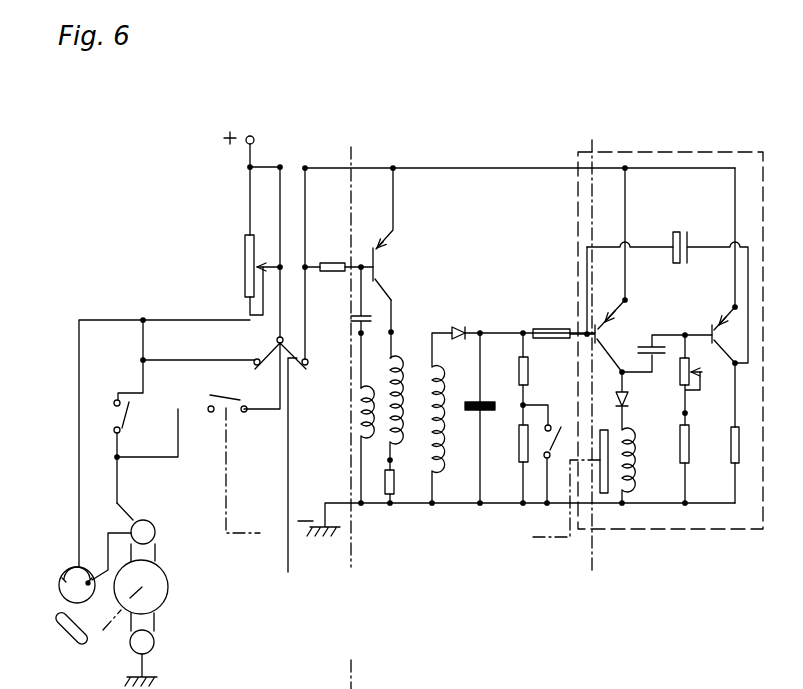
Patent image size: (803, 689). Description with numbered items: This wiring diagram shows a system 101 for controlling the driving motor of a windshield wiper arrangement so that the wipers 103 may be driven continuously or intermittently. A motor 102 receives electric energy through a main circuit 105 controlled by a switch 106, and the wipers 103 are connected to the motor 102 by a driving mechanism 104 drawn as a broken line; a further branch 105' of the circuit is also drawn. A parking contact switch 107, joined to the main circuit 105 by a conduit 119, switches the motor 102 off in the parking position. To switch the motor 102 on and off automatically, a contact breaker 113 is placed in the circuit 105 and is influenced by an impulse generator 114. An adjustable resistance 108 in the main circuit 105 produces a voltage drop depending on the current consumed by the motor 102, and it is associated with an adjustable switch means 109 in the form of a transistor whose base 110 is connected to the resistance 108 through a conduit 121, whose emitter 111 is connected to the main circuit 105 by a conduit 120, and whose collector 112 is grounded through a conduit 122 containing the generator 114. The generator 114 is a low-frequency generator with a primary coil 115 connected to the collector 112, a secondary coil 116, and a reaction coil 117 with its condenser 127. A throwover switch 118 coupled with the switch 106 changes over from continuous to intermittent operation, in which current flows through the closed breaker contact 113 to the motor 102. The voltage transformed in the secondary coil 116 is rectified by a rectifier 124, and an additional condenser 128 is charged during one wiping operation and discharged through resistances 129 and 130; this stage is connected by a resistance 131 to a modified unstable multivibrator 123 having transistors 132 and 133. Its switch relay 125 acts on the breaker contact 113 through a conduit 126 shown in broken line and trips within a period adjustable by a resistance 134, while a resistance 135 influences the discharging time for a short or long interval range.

The system 101 is at (553, 135).
The motor 102 is at (168, 587).
The wipers 103 is at (70, 633).
The driving mechanism 104 is at (105, 631).
The main circuit 105 is at (102, 456).
The connecting lead 105' is at (186, 330).
The switch 106 is at (121, 418).
The parking contact switch 107 is at (58, 573).
The adjustable resistance 108 is at (245, 262).
The adjustable switch means 109 is at (398, 223).
The base 110 is at (373, 263).
The emitter 111 is at (380, 253).
The collector 112 is at (383, 282).
The contact breaker 113 is at (235, 397).
The impulse generator 114 is at (423, 507).
The primary coil 115 is at (389, 458).
The secondary coil 116 is at (442, 448).
The reaction coil 117 is at (355, 440).
The throwover switch 118 is at (288, 478).
The conduit 119 is at (78, 367).
The conduit 120 is at (320, 166).
The conduit 121 is at (262, 265).
The conduit 122 is at (394, 311).
The unstable multivibrator 123 is at (685, 530).
The rectifier 124 is at (456, 325).
The switch relay 125 is at (603, 482).
The conduit 126 is at (570, 537).
The condenser 127 is at (353, 324).
The additional condenser 128 is at (487, 413).
The resistance 129 is at (523, 358).
The resistance 130 is at (524, 450).
The resistance 131 is at (548, 329).
The transistor 132 is at (612, 327).
The transistor 133 is at (738, 169).
The resistance 134 is at (681, 358).
The resistance 135 is at (738, 455).